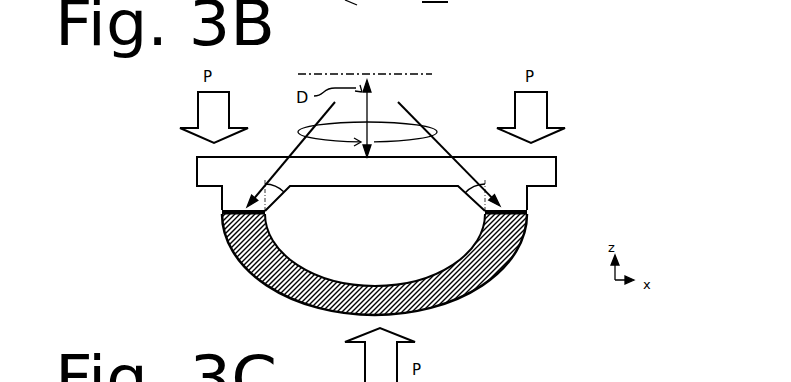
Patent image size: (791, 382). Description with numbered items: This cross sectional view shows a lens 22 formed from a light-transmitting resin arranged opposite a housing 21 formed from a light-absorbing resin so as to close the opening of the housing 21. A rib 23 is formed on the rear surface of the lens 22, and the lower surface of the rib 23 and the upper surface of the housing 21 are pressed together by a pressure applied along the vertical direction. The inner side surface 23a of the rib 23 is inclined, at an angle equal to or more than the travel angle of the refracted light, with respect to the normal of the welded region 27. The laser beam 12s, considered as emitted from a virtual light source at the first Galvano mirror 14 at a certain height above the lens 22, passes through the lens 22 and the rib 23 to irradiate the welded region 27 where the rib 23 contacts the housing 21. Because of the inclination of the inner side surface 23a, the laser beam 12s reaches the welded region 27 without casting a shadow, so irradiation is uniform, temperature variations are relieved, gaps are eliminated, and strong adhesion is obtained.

The first Galvano mirror 14 is at (439, 68).
The laser beam 12s is at (343, 110).
The lens 22 is at (209, 167).
The rib 23 is at (228, 195).
The inner side surface 23a is at (289, 204).
The welded region 27 is at (472, 221).
The housing 21 is at (250, 262).